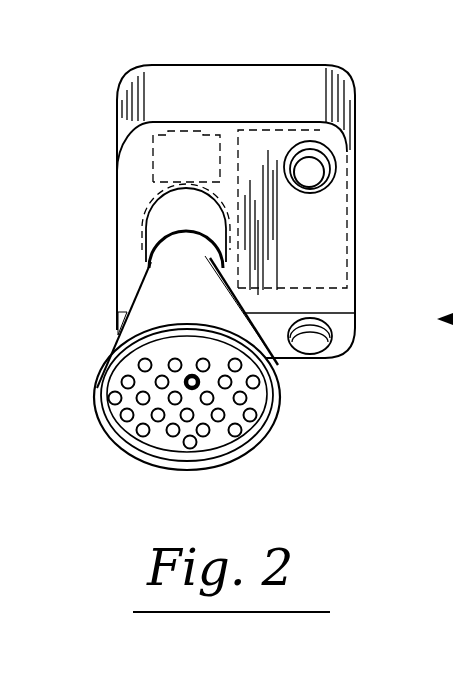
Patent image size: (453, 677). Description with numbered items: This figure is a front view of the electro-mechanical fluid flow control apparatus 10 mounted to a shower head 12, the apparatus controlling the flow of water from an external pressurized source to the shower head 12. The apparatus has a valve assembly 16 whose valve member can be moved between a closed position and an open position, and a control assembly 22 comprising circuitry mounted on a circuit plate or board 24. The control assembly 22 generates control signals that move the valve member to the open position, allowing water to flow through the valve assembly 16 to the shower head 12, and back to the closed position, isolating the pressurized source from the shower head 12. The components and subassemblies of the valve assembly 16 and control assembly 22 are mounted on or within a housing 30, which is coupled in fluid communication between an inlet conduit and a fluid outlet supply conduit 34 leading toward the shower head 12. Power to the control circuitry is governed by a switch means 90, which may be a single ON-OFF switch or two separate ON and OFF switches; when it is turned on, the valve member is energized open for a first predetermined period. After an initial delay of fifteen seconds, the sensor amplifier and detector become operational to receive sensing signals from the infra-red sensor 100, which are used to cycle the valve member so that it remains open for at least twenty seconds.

The electro-mechanical fluid flow control apparatus 10 is at (100, 261).
The shower head 12 is at (100, 342).
The valve assembly 16 is at (138, 144).
The control assembly 22 is at (334, 66).
The circuit plate or board 24 is at (335, 237).
The housing 30 is at (233, 65).
The fluid outlet supply conduit 34 is at (152, 185).
The switch means 90 is at (320, 176).
The infra-red sensor 100 is at (320, 348).